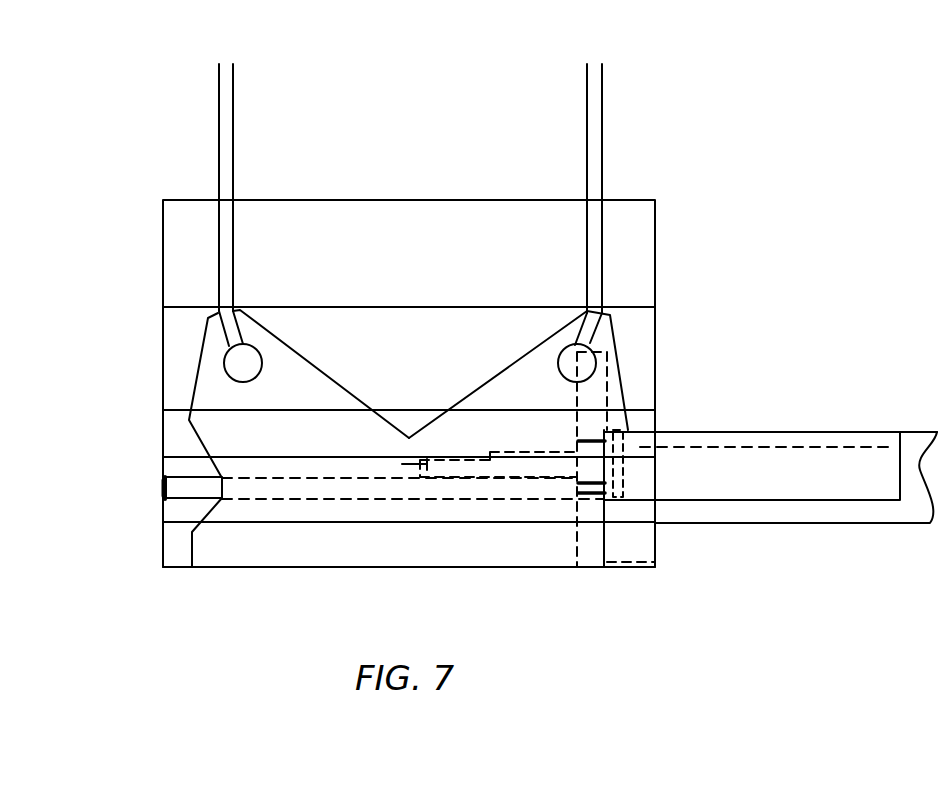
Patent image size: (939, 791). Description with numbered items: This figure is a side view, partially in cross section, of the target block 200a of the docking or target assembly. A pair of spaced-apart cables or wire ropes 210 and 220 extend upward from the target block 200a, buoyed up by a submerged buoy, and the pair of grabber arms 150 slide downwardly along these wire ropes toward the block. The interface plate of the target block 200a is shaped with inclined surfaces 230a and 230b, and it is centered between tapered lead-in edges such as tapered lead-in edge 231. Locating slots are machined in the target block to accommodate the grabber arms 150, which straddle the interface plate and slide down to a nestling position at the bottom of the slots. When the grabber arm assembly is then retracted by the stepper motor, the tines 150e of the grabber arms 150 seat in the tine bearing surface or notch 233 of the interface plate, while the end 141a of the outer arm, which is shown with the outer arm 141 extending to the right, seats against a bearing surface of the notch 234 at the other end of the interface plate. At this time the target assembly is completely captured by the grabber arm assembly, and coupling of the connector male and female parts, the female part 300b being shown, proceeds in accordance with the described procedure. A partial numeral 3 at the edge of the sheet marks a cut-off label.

The cable 210 is at (218, 87).
The cable 220 is at (604, 103).
The tapered lead-in edge 231 is at (638, 236).
The inclined surface 230a is at (197, 373).
The inclined surface 230b is at (622, 367).
The tine 150e is at (189, 475).
The notch 233 is at (157, 496).
The grabber arm 150 is at (302, 500).
The target block 200a is at (411, 557).
The connector female part 300b is at (530, 480).
The rod 141 is at (743, 517).
The end of outer arm 141a is at (640, 447).
The notch 234 is at (607, 528).
The partial numeral 3 is at (928, 381).